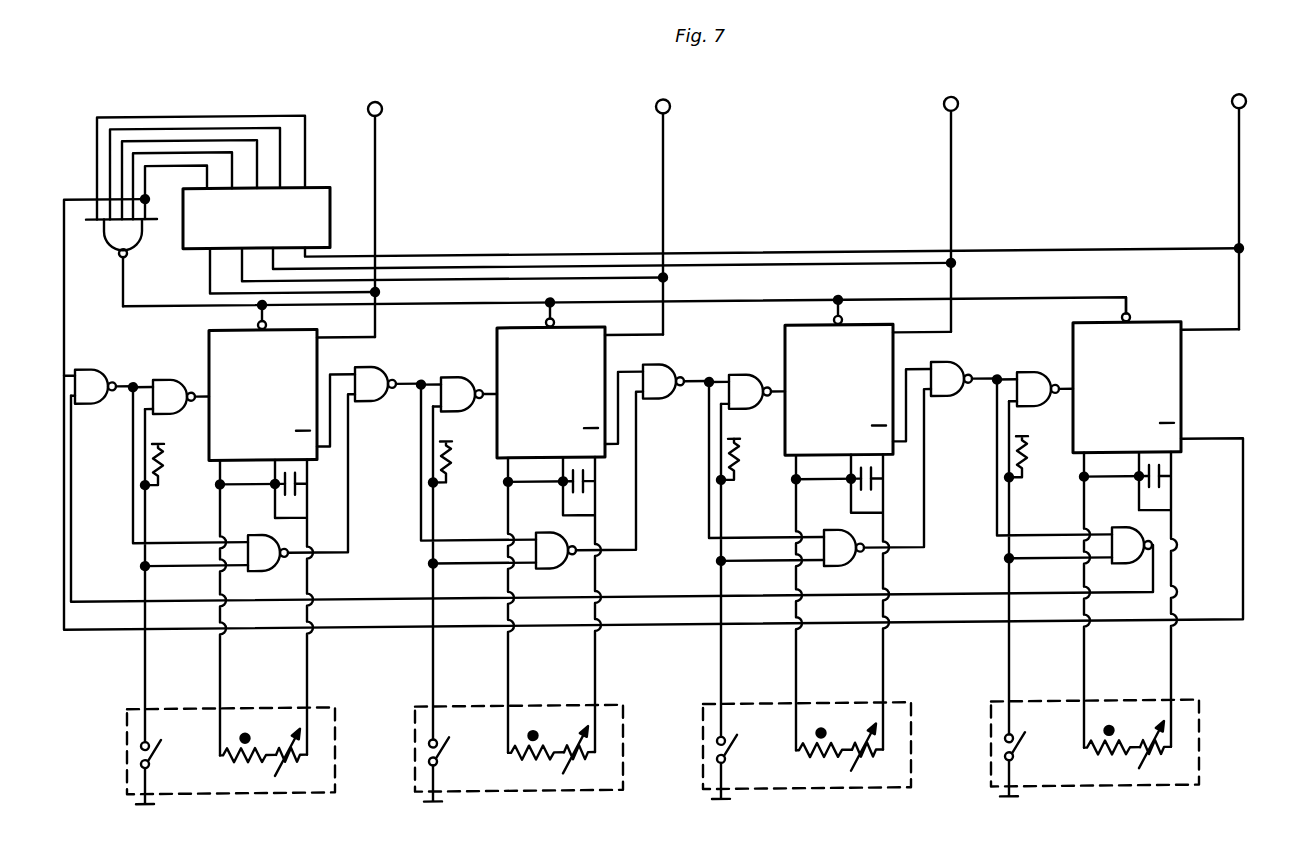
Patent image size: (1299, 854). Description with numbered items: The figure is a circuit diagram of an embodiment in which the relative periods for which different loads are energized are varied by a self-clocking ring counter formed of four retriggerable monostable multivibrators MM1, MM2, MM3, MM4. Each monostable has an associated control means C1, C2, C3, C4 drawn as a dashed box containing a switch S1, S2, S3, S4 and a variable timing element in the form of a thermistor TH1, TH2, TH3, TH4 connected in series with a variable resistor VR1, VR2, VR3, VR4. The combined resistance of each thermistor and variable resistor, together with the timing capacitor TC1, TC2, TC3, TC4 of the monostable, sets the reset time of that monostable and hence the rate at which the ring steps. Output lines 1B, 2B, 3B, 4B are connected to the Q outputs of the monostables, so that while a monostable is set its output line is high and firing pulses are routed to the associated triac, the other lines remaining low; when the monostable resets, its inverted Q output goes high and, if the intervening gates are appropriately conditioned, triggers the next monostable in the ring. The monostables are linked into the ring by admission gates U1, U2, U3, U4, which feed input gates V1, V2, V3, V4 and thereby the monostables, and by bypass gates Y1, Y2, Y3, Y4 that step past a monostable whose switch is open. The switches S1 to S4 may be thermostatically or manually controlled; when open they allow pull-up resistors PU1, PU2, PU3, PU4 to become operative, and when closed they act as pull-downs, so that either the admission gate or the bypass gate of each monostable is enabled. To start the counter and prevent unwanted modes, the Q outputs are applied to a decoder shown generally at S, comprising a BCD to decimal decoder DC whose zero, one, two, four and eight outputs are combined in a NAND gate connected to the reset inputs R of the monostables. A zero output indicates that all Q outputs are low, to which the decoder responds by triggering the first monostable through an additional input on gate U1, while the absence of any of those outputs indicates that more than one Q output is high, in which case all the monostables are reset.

The decoder S is at (203, 103).
The BCD to decimal decoder DC is at (330, 217).
The output line 1B is at (380, 114).
The output line 2B is at (679, 215).
The output line 3B is at (967, 212).
The output line 4B is at (1255, 210).
The admission gate U1 is at (98, 386).
The admission gate U2 is at (388, 384).
The admission gate U3 is at (676, 381).
The admission gate U4 is at (964, 378).
The input gate V1 is at (171, 397).
The input gate V2 is at (459, 394).
The input gate V3 is at (747, 391).
The input gate V4 is at (1035, 389).
The monostable multivibrator MM1 is at (292, 382).
The monostable multivibrator MM2 is at (580, 379).
The monostable multivibrator MM3 is at (868, 377).
The monostable multivibrator MM4 is at (1156, 374).
The pull-up resistor PU1 is at (163, 472).
The pull-up resistor PU2 is at (461, 474).
The pull-up resistor PU3 is at (749, 471).
The pull-up resistor PU4 is at (1037, 469).
The timing capacitor TC1 is at (293, 496).
The timing capacitor TC2 is at (601, 491).
The timing capacitor TC3 is at (889, 488).
The timing capacitor TC4 is at (1177, 486).
The bypass gate Y1 is at (268, 553).
The bypass gate Y2 is at (556, 550).
The bypass gate Y3 is at (844, 548).
The bypass gate Y4 is at (1132, 545).
The control means C1 is at (126, 733).
The control means C2 is at (491, 748).
The control means C3 is at (779, 745).
The control means C4 is at (1067, 743).
The switch S1 is at (150, 755).
The switch S2 is at (447, 769).
The switch S3 is at (735, 767).
The switch S4 is at (1023, 764).
The thermistor TH1 is at (248, 761).
The thermistor TH2 is at (536, 759).
The thermistor TH3 is at (824, 756).
The thermistor TH4 is at (1112, 754).
The variable resistor VR1 is at (300, 758).
The variable resistor VR2 is at (588, 756).
The variable resistor VR3 is at (876, 753).
The variable resistor VR4 is at (1164, 751).